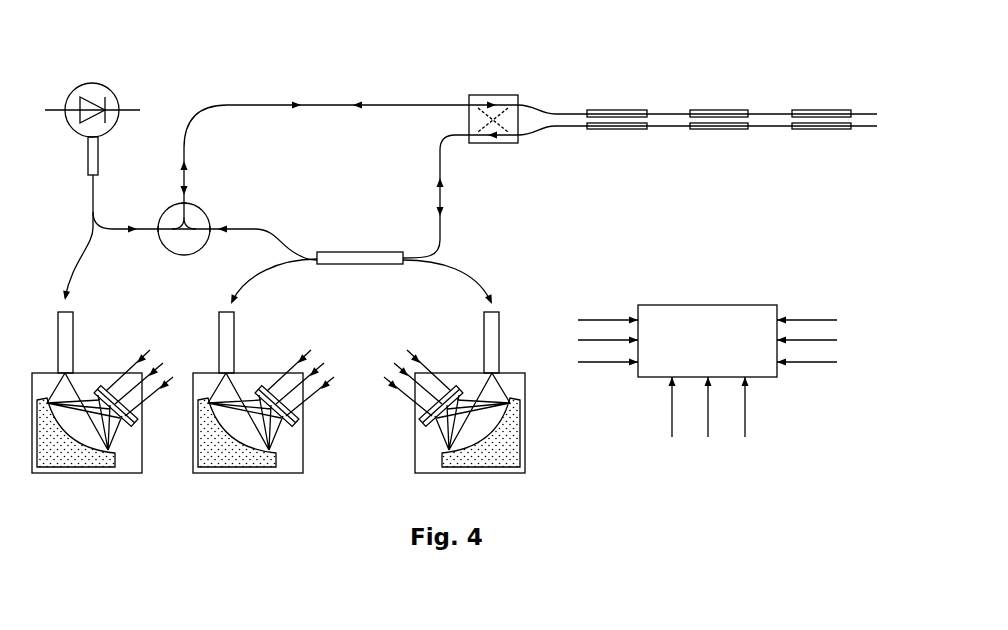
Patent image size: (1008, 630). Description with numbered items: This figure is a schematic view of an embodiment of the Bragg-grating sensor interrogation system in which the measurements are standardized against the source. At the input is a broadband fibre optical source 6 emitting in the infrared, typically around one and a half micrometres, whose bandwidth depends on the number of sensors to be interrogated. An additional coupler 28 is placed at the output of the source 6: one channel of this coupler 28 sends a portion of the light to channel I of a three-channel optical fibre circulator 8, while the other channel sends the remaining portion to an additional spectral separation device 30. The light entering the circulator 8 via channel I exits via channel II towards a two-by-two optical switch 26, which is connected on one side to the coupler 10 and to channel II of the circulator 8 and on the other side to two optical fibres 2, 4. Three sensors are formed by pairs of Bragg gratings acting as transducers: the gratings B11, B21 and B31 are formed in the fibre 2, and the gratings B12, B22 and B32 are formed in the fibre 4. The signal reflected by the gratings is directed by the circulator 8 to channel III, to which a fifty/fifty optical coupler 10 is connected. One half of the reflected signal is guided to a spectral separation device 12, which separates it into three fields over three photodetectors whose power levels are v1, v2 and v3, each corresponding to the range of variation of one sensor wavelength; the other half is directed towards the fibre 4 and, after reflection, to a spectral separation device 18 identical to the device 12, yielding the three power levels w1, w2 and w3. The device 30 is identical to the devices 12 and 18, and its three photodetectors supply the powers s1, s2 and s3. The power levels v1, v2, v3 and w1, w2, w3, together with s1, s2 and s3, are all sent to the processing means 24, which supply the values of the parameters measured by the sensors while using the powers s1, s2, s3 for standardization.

The broadband fibre optical source 6 is at (70, 83).
The additional coupler 28 is at (88, 154).
The optical fibre circulator 8 is at (198, 204).
The channel I is at (158, 231).
The channel II is at (176, 204).
The channel III is at (213, 237).
The 2×2 optical switch 26 is at (493, 94).
The optical fibre 2 is at (543, 105).
The optical fibre 4 is at (547, 135).
The Bragg grating B11 is at (617, 110).
The Bragg grating B12 is at (615, 130).
The Bragg grating B21 is at (723, 110).
The Bragg grating B22 is at (722, 130).
The Bragg grating B31 is at (823, 110).
The Bragg grating B32 is at (823, 130).
The optical coupler 10 is at (363, 252).
The processing means 24 is at (710, 305).
The additional spectral separation device 30 is at (93, 473).
The spectral separation device 18 is at (302, 448).
The spectral separation device 12 is at (525, 427).
The power s1 is at (112, 350).
The power s2 is at (160, 364).
The power s3 is at (168, 384).
The power level v1 is at (417, 352).
The power level v2 is at (389, 340).
The power level v3 is at (388, 407).
The power level w1 is at (273, 351).
The power level w2 is at (321, 365).
The power level w3 is at (328, 409).